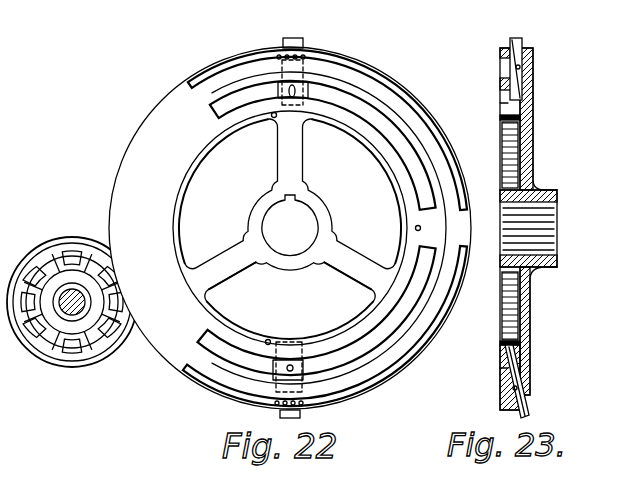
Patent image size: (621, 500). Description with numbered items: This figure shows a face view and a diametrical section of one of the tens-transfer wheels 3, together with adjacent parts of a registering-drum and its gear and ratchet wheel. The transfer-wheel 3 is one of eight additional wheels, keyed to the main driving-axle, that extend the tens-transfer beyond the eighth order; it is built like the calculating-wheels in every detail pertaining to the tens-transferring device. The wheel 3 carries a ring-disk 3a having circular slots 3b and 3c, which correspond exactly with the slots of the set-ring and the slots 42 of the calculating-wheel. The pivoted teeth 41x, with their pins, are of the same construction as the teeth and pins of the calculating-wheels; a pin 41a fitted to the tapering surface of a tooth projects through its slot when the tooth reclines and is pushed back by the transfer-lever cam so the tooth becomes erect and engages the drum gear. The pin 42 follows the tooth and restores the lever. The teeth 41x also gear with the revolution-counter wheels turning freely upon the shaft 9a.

In FIG. 22, the tens-transfer wheel 3 is at (290, 38).
In FIG. 23, the tens-transfer wheel 3 is at (500, 103).
In FIG. 22, the ring-disk 3a is at (276, 97).
In FIG. 22, the circular slot 3b is at (385, 122).
In FIG. 23, the circular slot 3b is at (500, 86).
In FIG. 22, the circular slot 3c is at (325, 226).
In FIG. 23, the circular slot 3c is at (500, 55).
In FIG. 22, the shaft 9a is at (64, 312).
In FIG. 22, the pin 41a is at (290, 369).
In FIG. 23, the pin 41a is at (500, 368).
In FIG. 22, the tooth 41x is at (304, 44).
In FIG. 23, the tooth 41x is at (543, 410).
In FIG. 22, the pin 42 is at (268, 340).
In FIG. 23, the pin 42 is at (500, 343).